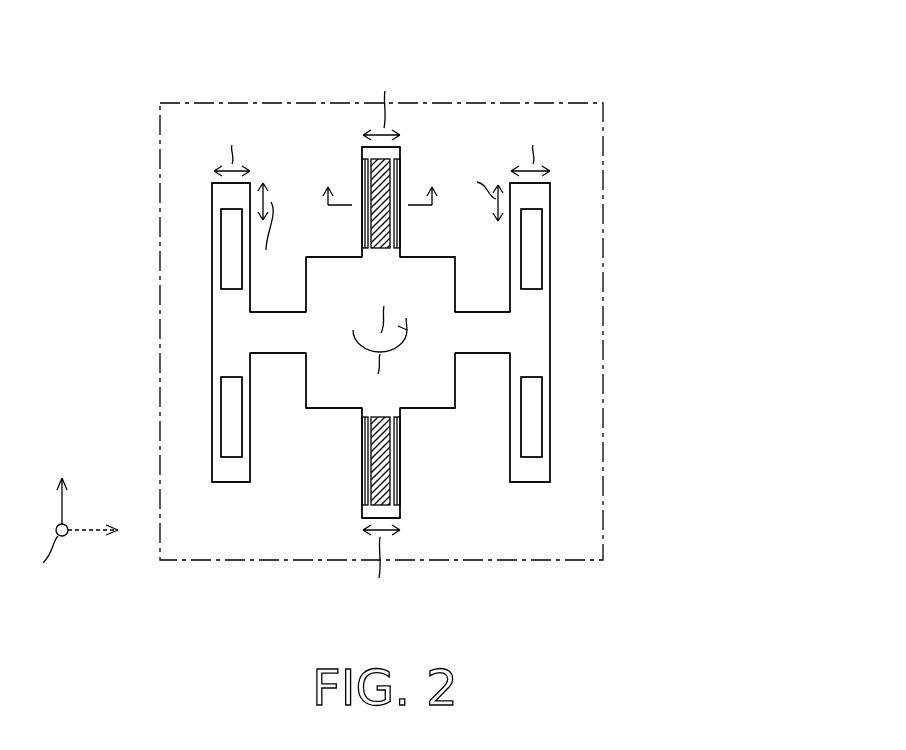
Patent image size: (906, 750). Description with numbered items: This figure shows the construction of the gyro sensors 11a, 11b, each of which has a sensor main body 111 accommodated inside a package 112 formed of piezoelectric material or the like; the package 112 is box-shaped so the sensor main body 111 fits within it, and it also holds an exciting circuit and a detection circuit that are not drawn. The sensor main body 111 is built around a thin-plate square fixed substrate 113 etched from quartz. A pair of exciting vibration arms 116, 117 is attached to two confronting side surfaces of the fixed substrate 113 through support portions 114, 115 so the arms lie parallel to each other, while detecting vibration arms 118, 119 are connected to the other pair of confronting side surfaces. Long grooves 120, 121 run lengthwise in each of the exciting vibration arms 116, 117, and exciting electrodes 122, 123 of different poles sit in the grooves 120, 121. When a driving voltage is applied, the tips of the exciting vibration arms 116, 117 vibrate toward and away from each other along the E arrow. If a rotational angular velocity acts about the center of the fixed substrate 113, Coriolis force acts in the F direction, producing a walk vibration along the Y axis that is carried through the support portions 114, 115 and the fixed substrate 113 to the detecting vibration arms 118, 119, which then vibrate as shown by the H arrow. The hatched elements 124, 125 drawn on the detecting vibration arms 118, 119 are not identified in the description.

The gyro sensor 11a is at (430, 308).
The gyro sensor 11b is at (603, 40).
The sensor main body 111 is at (303, 256).
The package 112 is at (603, 147).
The fixed substrate 113 is at (312, 409).
The support portion 114 is at (277, 354).
The support portion 115 is at (483, 354).
The exciting vibration arm 116 is at (212, 331).
The exciting vibration arm 117 is at (550, 332).
The detecting vibration arm 118 is at (356, 183).
The detecting vibration arm 119 is at (362, 476).
The long groove 120 is at (212, 238).
The long groove 121 is at (212, 405).
The exciting electrode 122 is at (229, 275).
The exciting electrode 123 is at (230, 444).
The driving electrode 124 is at (362, 217).
The piezoelectric element 125 is at (393, 173).